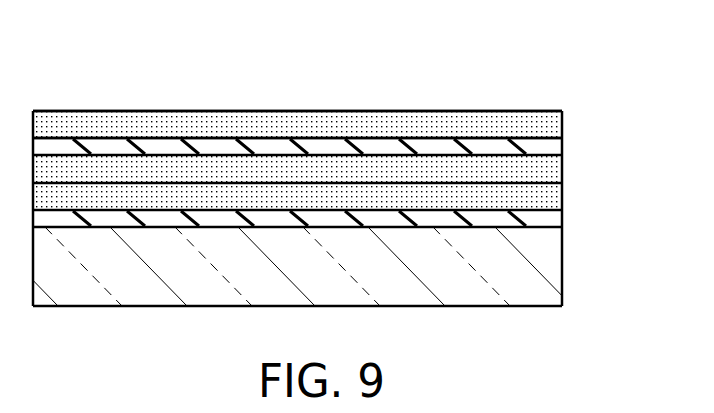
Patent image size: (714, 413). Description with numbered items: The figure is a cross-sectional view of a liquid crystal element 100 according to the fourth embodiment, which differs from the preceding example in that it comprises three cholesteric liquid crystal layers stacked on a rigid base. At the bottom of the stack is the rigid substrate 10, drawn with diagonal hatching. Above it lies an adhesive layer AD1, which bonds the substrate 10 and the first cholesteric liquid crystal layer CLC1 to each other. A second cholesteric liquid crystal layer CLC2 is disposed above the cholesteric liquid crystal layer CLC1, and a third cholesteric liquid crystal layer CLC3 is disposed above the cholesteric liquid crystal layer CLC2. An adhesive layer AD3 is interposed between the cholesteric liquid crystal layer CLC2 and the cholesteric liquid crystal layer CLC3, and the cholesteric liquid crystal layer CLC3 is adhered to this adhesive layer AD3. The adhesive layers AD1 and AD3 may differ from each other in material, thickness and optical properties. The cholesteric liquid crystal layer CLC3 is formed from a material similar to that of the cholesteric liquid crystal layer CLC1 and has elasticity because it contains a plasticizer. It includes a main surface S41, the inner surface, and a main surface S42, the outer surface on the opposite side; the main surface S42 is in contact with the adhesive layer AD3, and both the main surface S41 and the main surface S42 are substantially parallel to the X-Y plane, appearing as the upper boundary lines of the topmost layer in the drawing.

The liquid crystal element 100 is at (543, 70).
The cholesteric liquid crystal layer CLC3 is at (556, 122).
The adhesive layer AD3 is at (554, 148).
The cholesteric liquid crystal layer CLC2 is at (556, 170).
The cholesteric liquid crystal layer CLC1 is at (556, 196).
The adhesive layer AD1 is at (556, 221).
The substrate 10 is at (554, 258).
The main surface S41 is at (203, 111).
The main surface S42 is at (217, 139).